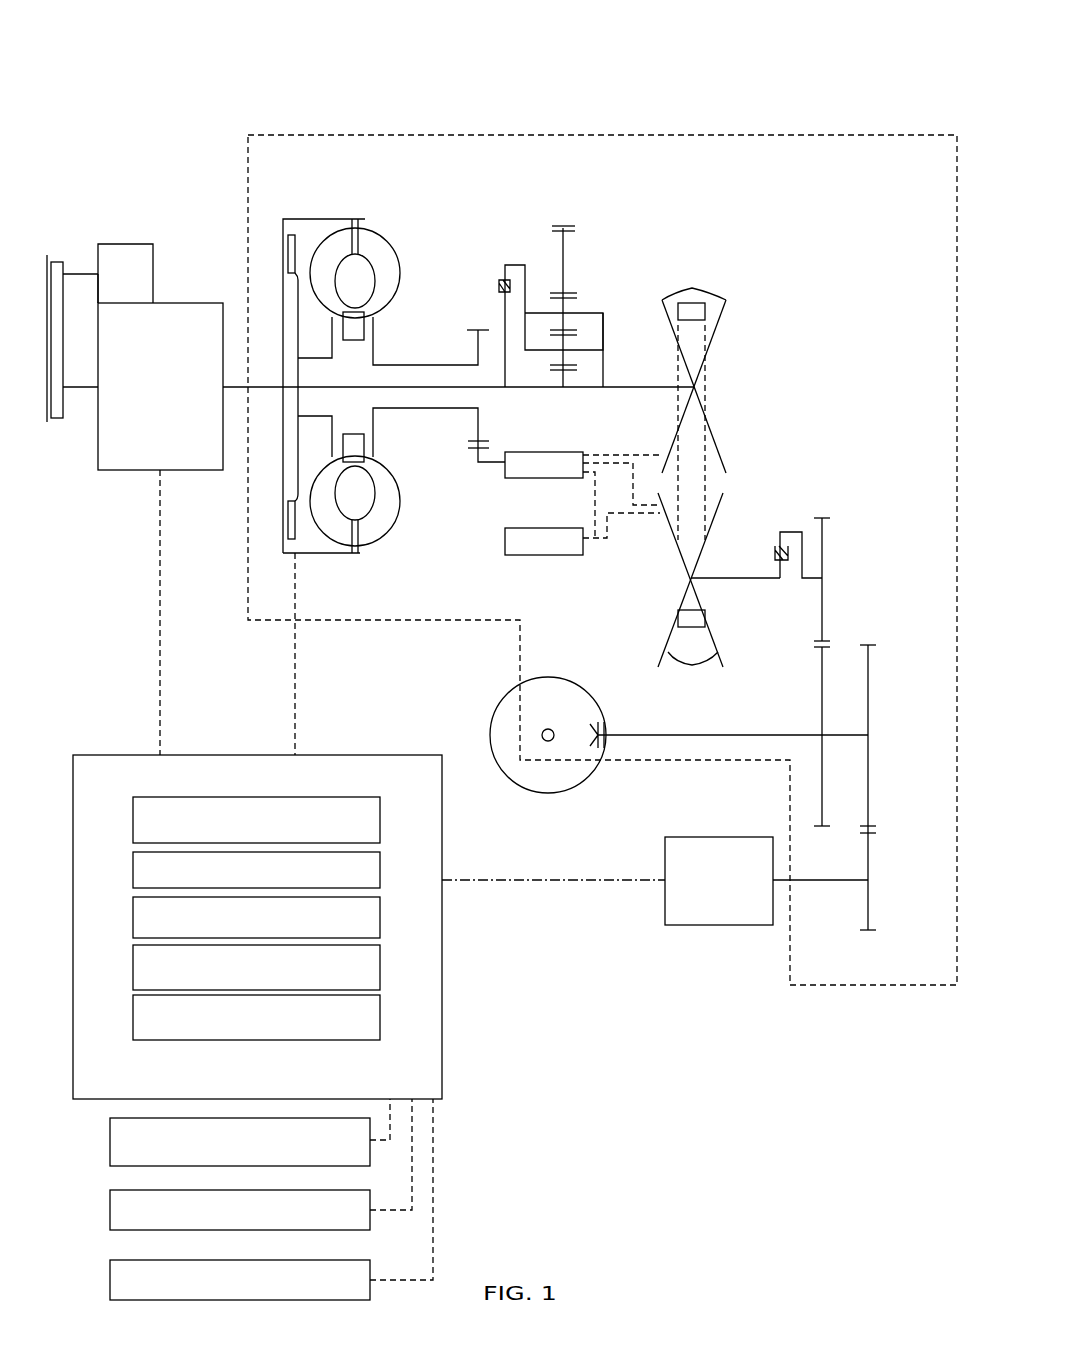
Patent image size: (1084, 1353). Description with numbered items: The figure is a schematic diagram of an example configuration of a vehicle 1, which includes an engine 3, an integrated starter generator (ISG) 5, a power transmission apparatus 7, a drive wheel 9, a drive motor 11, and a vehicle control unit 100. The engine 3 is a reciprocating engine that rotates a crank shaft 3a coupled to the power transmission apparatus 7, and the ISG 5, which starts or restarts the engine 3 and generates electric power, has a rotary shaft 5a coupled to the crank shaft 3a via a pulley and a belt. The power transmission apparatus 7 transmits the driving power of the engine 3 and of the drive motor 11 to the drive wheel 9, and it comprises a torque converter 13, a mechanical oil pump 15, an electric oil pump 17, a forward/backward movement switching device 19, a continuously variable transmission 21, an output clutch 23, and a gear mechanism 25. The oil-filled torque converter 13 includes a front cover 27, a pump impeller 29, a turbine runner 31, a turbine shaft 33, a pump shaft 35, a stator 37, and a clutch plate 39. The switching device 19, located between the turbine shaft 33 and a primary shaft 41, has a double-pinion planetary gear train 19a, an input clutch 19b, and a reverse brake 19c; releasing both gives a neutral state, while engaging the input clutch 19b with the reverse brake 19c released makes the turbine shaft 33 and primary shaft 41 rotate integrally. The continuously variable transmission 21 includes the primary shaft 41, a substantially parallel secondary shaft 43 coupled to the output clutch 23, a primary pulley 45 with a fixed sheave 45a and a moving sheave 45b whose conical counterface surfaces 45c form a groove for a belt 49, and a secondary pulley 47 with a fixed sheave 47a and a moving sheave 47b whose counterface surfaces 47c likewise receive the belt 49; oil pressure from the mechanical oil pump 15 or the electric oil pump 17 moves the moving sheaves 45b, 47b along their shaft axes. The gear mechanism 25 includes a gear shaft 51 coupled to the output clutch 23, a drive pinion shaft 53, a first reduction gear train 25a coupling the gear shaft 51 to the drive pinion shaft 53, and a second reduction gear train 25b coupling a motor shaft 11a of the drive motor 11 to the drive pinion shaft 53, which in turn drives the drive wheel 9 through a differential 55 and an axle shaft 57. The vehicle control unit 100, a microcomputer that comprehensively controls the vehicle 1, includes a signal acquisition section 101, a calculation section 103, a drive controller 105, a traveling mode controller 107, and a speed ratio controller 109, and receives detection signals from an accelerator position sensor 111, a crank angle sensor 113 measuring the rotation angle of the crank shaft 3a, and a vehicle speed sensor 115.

The vehicle 1 is at (220, 62).
The engine 3 is at (169, 399).
The crank shaft 3a is at (238, 385).
The integrated starter generator 5 is at (124, 244).
The rotary shaft 5a is at (78, 272).
The power transmission apparatus 7 is at (305, 132).
The drive wheel 9 is at (560, 744).
The drive motor 11 is at (718, 926).
The motor shaft 11a is at (824, 882).
The torque converter 13 is at (381, 373).
The mechanical oil pump 15 is at (545, 479).
The electric oil pump 17 is at (545, 556).
The forward/backward movement switching device 19 is at (554, 264).
The planetary gear train 19a is at (612, 272).
The input clutch 19b is at (503, 280).
The reverse brake 19c is at (572, 232).
The continuously variable transmission 21 is at (691, 416).
The output clutch 23 is at (778, 545).
The gear mechanism 25 is at (879, 693).
The first reduction gear train 25a is at (835, 590).
The second reduction gear train 25b is at (885, 760).
The front cover 27 is at (286, 512).
The pump impeller 29 is at (386, 532).
The turbine runner 31 is at (346, 556).
The turbine shaft 33 is at (422, 412).
The pump shaft 35 is at (422, 366).
The stator 37 is at (366, 440).
The clutch plate 39 is at (292, 556).
The primary shaft 41 is at (618, 386).
The secondary shaft 43 is at (735, 577).
The primary pulley 45 is at (695, 388).
The fixed sheave 45a is at (660, 318).
The moving sheave 45b is at (712, 426).
The counterface surfaces 45c is at (692, 298).
The secondary pulley 47 is at (689, 592).
The fixed sheave 47a is at (712, 632).
The moving sheave 47b is at (660, 535).
The counterface surfaces 47c is at (692, 668).
The belt 49 is at (678, 617).
The gear shaft 51 is at (815, 517).
The drive pinion shaft 53 is at (748, 734).
The differential 55 is at (606, 716).
The axle shaft 57 is at (552, 728).
The vehicle control unit 100 is at (257, 905).
The signal acquisition section 101 is at (380, 820).
The calculation section 103 is at (380, 870).
The drive controller 105 is at (380, 918).
The traveling mode controller 107 is at (380, 980).
The speed ratio controller 109 is at (380, 1015).
The accelerator position sensor 111 is at (110, 1140).
The crank angle sensor 113 is at (110, 1210).
The vehicle speed sensor 115 is at (110, 1280).